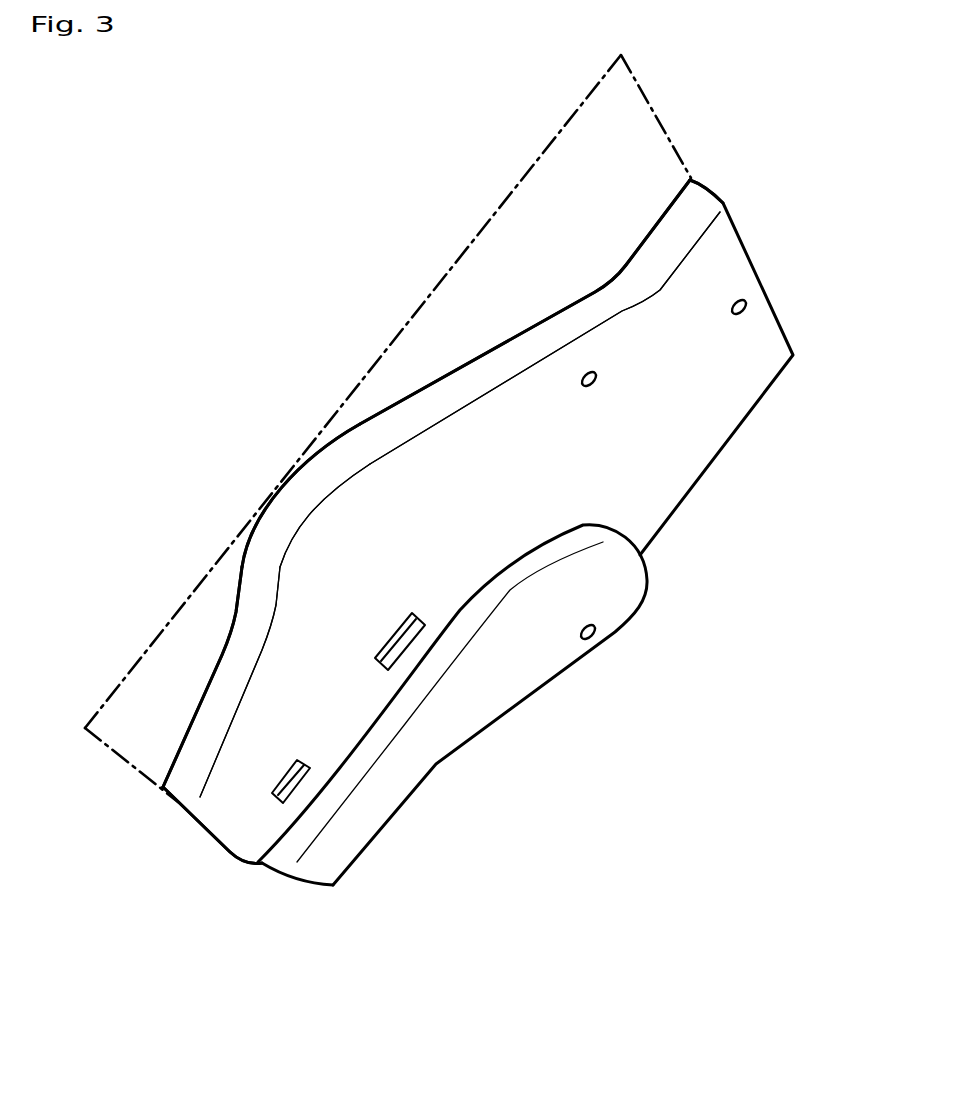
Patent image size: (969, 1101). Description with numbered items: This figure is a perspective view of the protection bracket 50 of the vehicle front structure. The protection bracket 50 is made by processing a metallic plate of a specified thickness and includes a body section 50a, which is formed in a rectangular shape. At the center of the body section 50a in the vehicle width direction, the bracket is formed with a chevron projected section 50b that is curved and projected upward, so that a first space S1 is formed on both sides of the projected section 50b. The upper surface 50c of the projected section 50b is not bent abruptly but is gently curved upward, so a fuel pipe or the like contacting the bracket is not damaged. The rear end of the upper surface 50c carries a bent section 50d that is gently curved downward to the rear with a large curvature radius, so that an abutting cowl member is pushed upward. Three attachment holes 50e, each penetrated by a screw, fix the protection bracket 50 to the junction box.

The protection bracket 50 is at (411, 382).
The body section 50a is at (240, 800).
The projected section 50b is at (317, 553).
The upper surface of the projected section 50c is at (507, 360).
The bent section 50d is at (373, 460).
The attachment holes 50e is at (597, 384).
The first space S1 is at (545, 235).